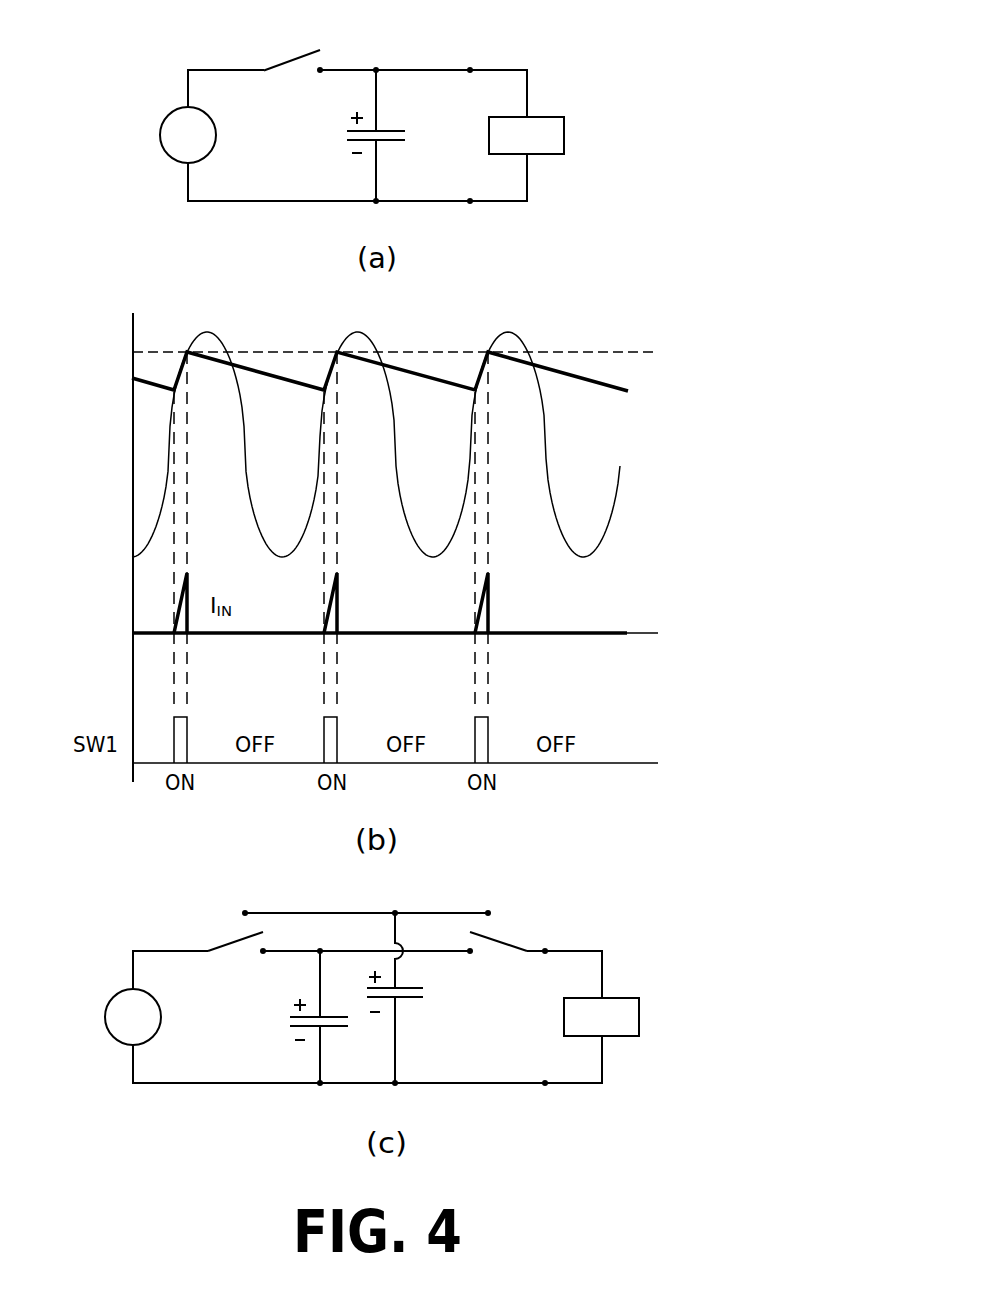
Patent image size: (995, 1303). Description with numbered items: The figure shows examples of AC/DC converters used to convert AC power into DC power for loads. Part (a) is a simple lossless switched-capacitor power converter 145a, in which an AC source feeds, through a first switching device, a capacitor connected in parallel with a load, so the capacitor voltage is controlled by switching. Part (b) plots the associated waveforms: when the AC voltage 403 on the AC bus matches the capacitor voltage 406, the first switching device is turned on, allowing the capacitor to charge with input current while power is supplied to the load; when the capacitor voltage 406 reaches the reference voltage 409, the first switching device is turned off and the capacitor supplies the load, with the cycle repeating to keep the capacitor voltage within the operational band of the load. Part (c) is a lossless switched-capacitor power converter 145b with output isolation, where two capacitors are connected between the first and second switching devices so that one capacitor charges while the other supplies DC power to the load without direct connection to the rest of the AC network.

The lossless switched-capacitor power converter 145a is at (447, 48).
The lossless switched-capacitor power converter with output isolation 145b is at (509, 910).
The reference voltage 409 is at (437, 353).
The capacitor voltage 406 is at (420, 376).
The AC voltage 403 is at (423, 444).